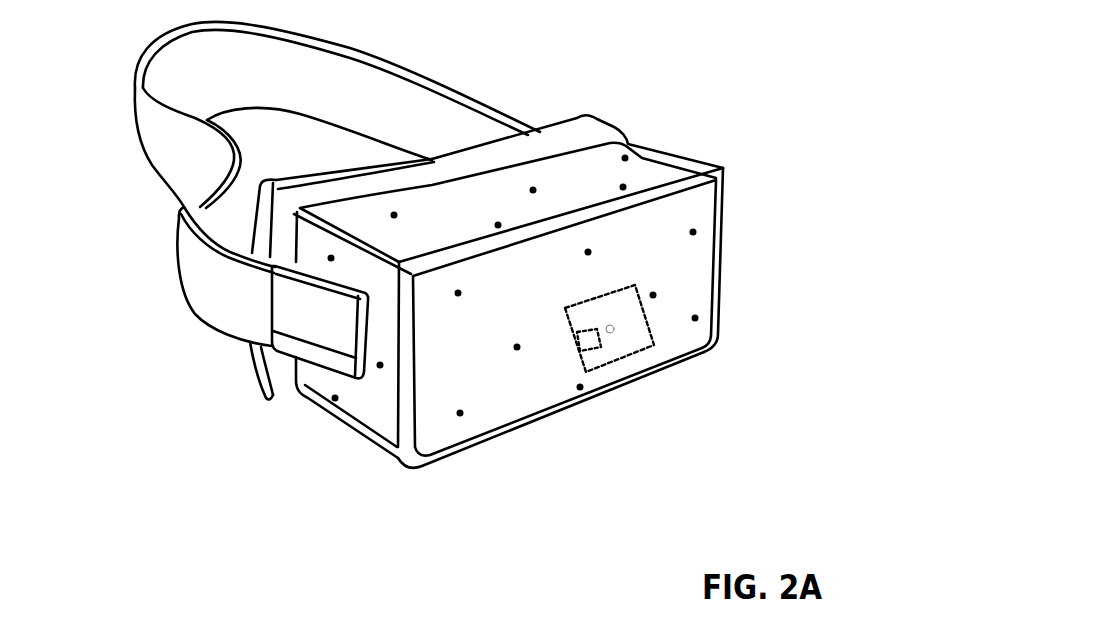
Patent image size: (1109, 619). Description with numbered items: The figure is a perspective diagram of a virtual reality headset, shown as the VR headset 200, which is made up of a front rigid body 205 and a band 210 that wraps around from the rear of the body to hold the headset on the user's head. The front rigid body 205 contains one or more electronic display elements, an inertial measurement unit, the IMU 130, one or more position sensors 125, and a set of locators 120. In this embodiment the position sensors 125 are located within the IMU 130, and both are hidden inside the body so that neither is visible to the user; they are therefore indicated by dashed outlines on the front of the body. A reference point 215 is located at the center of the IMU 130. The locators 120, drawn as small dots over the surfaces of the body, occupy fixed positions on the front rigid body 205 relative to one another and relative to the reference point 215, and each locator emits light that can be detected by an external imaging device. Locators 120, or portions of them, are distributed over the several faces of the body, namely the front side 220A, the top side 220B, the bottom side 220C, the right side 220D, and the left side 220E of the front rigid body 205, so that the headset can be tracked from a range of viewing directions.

The VR headset 200 is at (56, 24).
The front rigid body 205 is at (490, 311).
The band 210 is at (437, 86).
The reference point 215 is at (613, 346).
The locators 120 is at (710, 312).
The position sensors 125 is at (575, 361).
The IMU 130 is at (665, 348).
The front side 220A is at (447, 444).
The top side 220B is at (360, 213).
The bottom side 220C is at (329, 445).
The right side 220D is at (370, 409).
The left side 220E is at (702, 145).